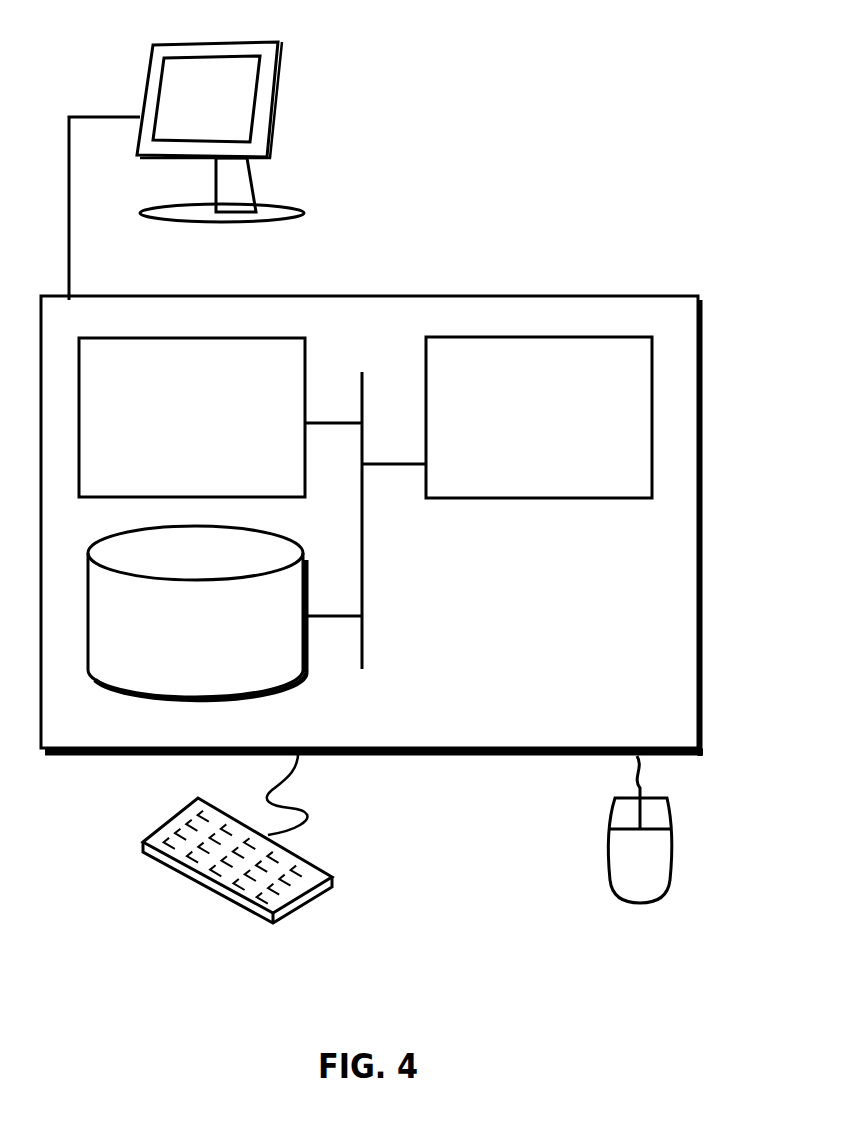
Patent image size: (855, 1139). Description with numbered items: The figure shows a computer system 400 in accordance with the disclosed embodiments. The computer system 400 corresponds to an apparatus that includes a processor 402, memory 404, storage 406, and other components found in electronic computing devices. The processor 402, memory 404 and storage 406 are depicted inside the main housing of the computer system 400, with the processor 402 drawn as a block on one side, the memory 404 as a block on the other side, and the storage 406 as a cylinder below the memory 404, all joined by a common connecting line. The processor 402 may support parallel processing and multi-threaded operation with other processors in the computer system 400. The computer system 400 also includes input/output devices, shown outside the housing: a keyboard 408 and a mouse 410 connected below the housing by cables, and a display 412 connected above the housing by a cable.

The computer system 400 is at (416, 273).
The processor 402 is at (539, 417).
The memory 404 is at (192, 417).
The storage 406 is at (197, 613).
The keyboard 408 is at (160, 858).
The mouse 410 is at (640, 829).
The display 412 is at (186, 171).